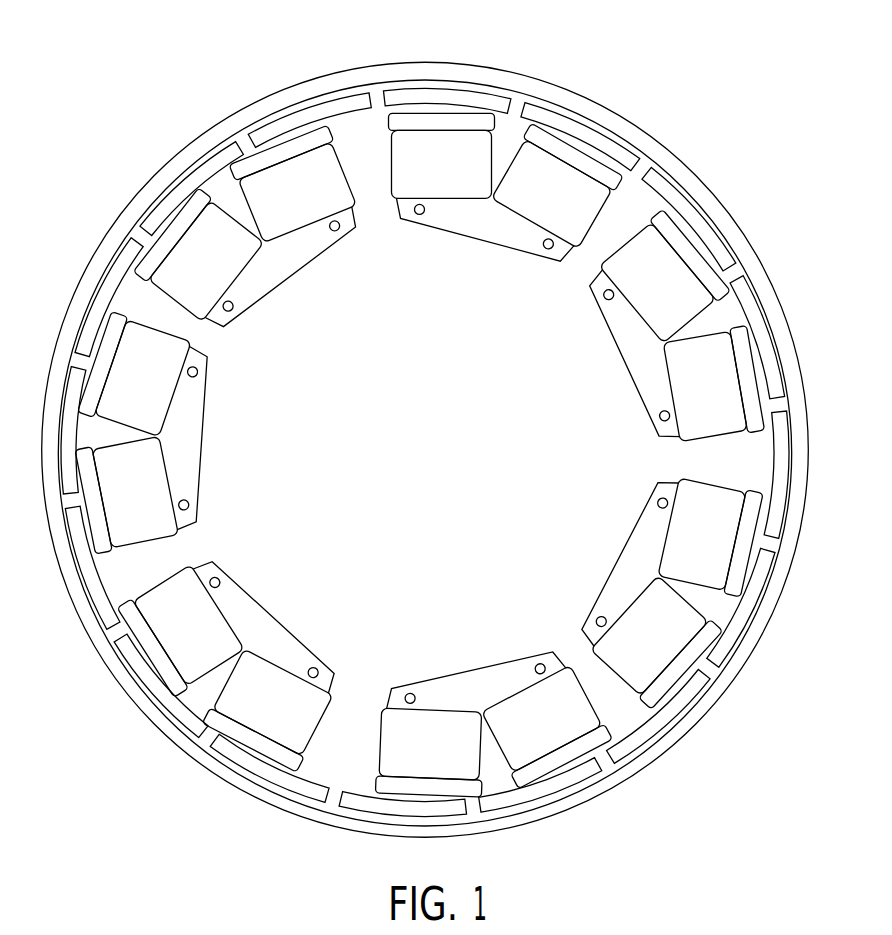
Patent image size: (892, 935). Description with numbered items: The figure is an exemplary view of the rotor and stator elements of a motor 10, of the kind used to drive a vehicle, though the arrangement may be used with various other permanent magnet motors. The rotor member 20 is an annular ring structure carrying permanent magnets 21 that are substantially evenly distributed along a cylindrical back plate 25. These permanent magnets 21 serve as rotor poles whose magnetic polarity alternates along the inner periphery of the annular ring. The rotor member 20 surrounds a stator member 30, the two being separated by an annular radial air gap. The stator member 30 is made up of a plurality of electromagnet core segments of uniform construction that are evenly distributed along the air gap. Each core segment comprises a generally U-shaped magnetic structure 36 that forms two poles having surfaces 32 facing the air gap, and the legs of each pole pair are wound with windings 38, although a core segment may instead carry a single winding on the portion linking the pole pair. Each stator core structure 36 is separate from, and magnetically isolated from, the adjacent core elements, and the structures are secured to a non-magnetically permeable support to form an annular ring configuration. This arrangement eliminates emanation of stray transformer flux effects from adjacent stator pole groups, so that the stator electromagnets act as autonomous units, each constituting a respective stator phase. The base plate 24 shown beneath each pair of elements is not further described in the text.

The motor 10 is at (249, 80).
The rotor member 20 is at (800, 302).
The permanent magnets 21 is at (672, 166).
The seat base plate 24 is at (512, 252).
The cylindrical back plate 25 is at (605, 111).
The stator member 30 is at (262, 402).
The pole surfaces 32 is at (421, 118).
The U-shaped magnetic structure 36 is at (422, 213).
The windings 38 is at (455, 143).